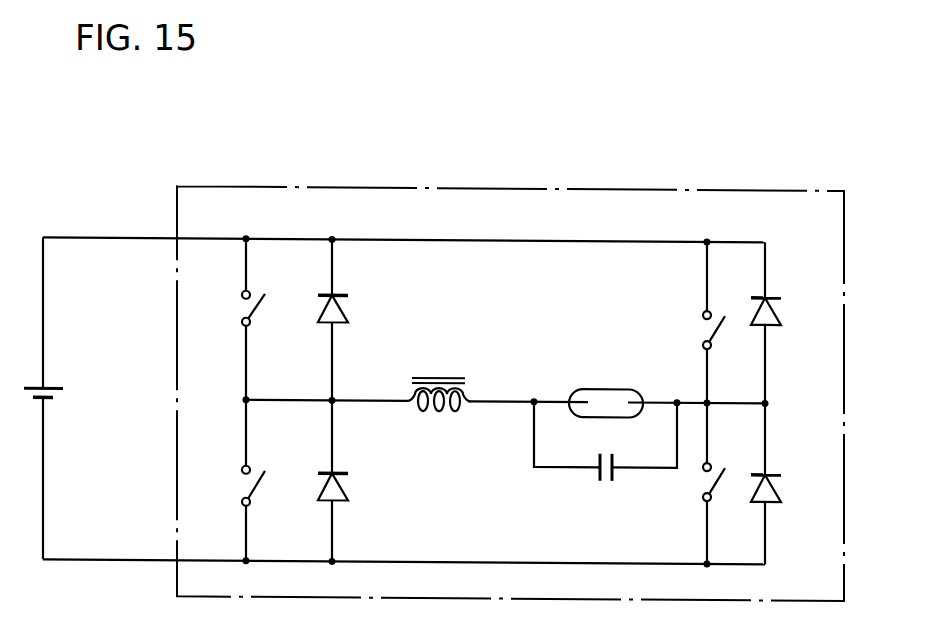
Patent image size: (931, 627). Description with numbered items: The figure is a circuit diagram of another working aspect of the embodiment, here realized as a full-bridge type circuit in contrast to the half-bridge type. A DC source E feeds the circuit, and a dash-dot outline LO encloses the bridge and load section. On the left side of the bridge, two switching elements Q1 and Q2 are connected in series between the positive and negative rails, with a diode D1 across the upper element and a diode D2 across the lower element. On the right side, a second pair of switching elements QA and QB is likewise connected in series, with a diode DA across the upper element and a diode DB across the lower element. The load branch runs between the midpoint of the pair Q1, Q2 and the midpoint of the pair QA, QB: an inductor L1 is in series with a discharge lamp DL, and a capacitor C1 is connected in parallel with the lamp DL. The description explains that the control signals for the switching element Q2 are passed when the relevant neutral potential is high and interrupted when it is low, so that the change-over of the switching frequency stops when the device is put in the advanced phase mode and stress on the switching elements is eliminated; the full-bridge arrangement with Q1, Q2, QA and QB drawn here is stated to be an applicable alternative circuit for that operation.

The lighting circuit / load unit LO is at (523, 188).
The DC power source E is at (57, 398).
The switching element Q1 is at (231, 318).
The switching element Q2 is at (226, 480).
The diode D1 is at (357, 320).
The diode D2 is at (357, 481).
The inductor L1 is at (439, 378).
The discharge lamp DL is at (606, 385).
The capacitor C1 is at (605, 462).
The switching element QA is at (688, 323).
The switching element QB is at (690, 484).
The diode DA is at (790, 323).
The diode DB is at (790, 484).